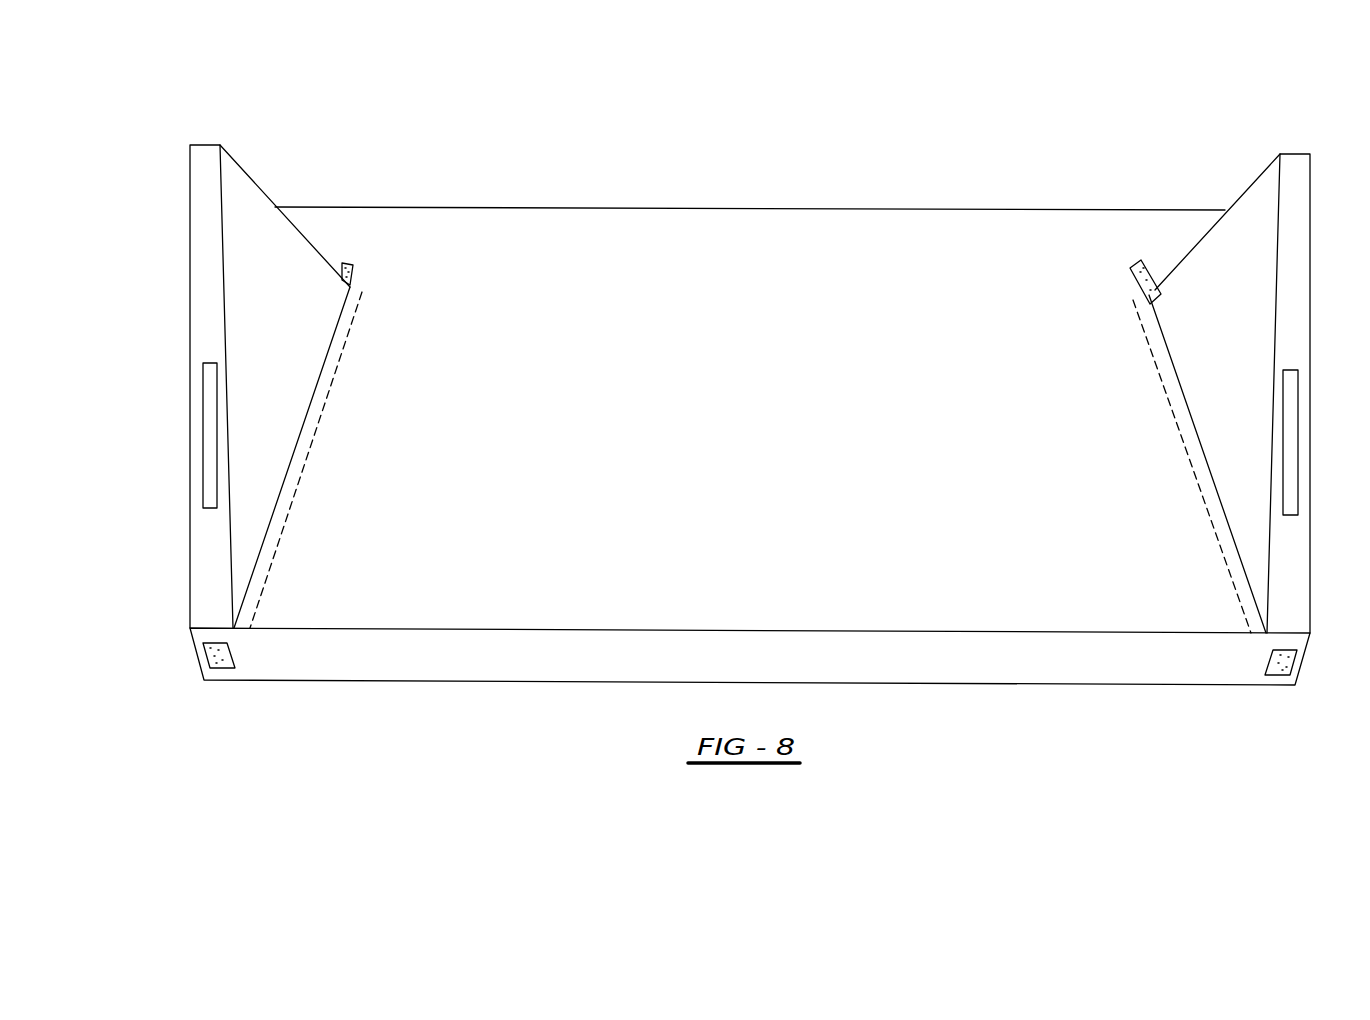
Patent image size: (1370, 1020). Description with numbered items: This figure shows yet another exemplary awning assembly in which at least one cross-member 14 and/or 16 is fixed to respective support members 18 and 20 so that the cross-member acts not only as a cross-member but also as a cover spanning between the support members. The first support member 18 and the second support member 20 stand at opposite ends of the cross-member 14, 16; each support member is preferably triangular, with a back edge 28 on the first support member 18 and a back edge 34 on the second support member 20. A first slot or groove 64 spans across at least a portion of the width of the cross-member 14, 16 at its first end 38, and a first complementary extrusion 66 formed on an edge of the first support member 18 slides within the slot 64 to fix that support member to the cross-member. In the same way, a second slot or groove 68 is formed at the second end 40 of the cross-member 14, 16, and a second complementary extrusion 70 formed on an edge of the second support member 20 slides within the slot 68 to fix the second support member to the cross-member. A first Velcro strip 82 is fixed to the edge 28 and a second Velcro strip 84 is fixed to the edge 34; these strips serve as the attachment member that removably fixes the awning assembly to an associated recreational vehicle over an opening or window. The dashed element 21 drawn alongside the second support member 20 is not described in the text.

The first cross-member or beam 14 is at (750, 413).
The second cross-member or beam 16 is at (713, 315).
The first support member 18 is at (189, 386).
The second support member 20 is at (1223, 343).
The brace bar 21 is at (298, 457).
The second arm or edge 28 is at (212, 545).
The fifth arm or edge 34 is at (1252, 359).
The first end 38 is at (330, 237).
The second end 40 is at (1178, 230).
The first slot or groove 64 is at (353, 267).
The first complementary extrusion 66 is at (218, 652).
The second slot or groove 68 is at (1137, 265).
The second complementary extrusion 70 is at (1282, 665).
The first Velcro strip 82 is at (202, 453).
The second Velcro strip 84 is at (1292, 448).